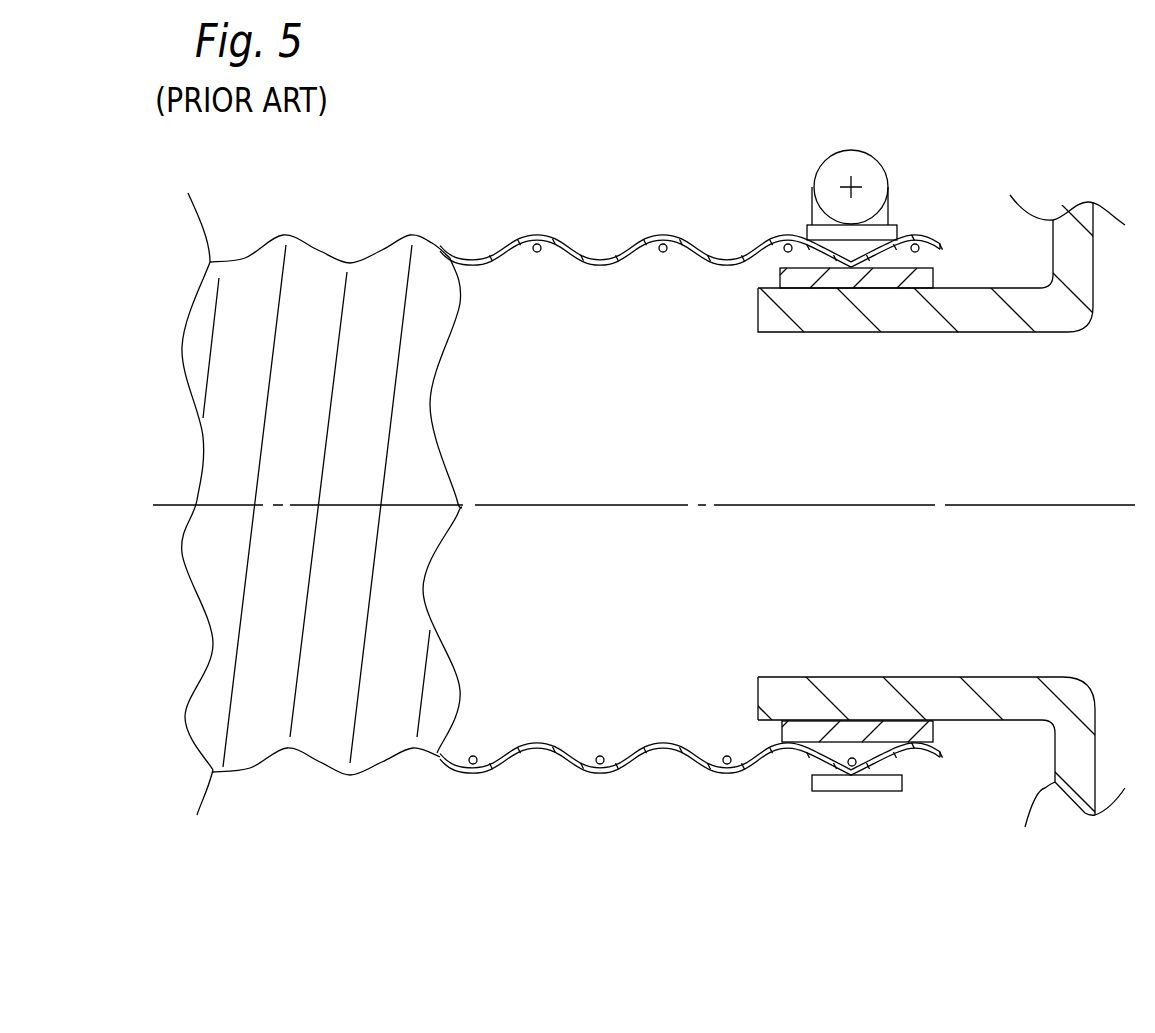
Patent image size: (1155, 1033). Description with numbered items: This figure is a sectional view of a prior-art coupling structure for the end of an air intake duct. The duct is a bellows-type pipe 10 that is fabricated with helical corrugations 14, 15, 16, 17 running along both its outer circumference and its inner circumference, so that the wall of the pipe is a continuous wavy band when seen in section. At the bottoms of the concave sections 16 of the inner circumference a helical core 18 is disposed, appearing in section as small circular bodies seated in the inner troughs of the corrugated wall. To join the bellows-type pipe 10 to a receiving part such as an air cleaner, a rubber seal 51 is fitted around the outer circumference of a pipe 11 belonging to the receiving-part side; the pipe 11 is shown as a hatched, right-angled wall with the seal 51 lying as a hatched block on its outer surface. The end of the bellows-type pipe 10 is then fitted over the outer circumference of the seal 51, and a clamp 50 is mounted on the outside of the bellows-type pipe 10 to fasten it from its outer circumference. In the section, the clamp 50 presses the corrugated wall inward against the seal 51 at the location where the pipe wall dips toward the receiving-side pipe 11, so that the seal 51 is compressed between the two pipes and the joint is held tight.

The bellows-type pipe 10 is at (447, 190).
The pipe 11 is at (1013, 733).
The helical corrugation 14 is at (691, 442).
The helical corrugation 15 is at (541, 232).
The concave section 16 is at (537, 253).
The helical corrugation 17 is at (605, 262).
The helical core 18 is at (663, 253).
The clamp 50 is at (888, 136).
The rubber seal 51 is at (793, 282).